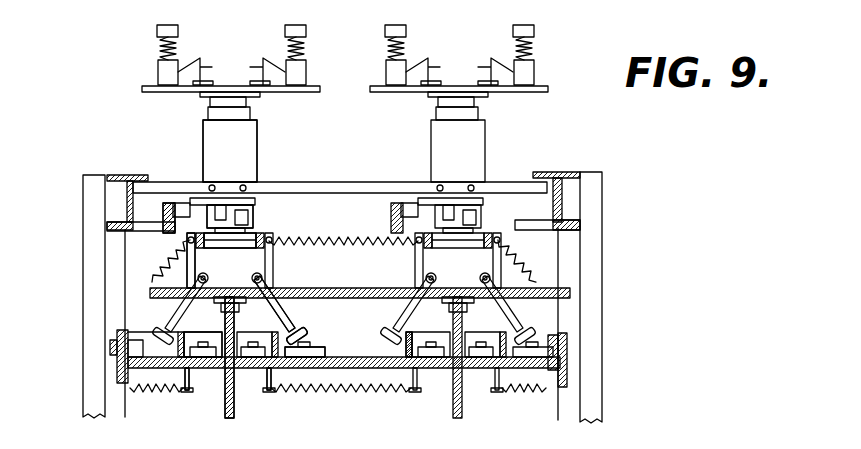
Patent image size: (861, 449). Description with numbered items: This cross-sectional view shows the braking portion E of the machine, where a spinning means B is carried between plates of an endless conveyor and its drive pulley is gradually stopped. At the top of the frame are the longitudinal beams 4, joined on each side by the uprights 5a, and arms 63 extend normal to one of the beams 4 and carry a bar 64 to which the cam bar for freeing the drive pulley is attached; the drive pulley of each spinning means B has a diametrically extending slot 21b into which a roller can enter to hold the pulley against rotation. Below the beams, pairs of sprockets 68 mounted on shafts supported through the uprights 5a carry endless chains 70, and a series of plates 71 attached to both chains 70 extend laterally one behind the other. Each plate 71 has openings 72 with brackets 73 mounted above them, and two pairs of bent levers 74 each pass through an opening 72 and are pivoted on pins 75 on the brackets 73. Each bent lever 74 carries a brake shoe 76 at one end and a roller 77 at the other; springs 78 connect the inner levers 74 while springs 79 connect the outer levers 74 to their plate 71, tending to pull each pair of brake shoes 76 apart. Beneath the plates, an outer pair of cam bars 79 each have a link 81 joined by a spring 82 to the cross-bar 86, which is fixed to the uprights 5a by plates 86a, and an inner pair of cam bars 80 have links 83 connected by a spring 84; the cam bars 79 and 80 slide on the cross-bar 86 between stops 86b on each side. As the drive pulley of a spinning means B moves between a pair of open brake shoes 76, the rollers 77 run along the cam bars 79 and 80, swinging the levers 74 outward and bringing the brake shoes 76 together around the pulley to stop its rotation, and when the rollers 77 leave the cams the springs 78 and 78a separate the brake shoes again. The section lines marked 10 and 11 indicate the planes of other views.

The longitudinal beam 4 is at (125, 178).
The bar 64 is at (173, 203).
The arm 63 is at (127, 229).
The upright 5a is at (122, 322).
The spinning means B is at (257, 147).
The diametrically extending slot 21b is at (247, 212).
The section line 11 is at (347, 125).
The section line 10 is at (100, 232).
The brake shoe 76 is at (173, 220).
The spring 78 is at (330, 240).
The pin 75 is at (187, 237).
The bracket 73 is at (163, 270).
The spring 78a is at (152, 282).
The opening 72 is at (207, 280).
The braking portion E is at (397, 268).
The bent lever 74 is at (175, 310).
The endless chain 70 is at (222, 308).
The plate 71 is at (338, 300).
The cross-bar 86 is at (337, 355).
The spring / outer cam bar 79 is at (118, 375).
The roller 77 is at (128, 362).
The link 81 is at (189, 382).
The sprocket 68 is at (223, 408).
The link 83 is at (268, 392).
The spring 84 is at (310, 395).
The inner cam bar 80 is at (428, 340).
The spring 82 is at (157, 397).
The plate 86a is at (118, 380).
The stop 86b is at (126, 384).